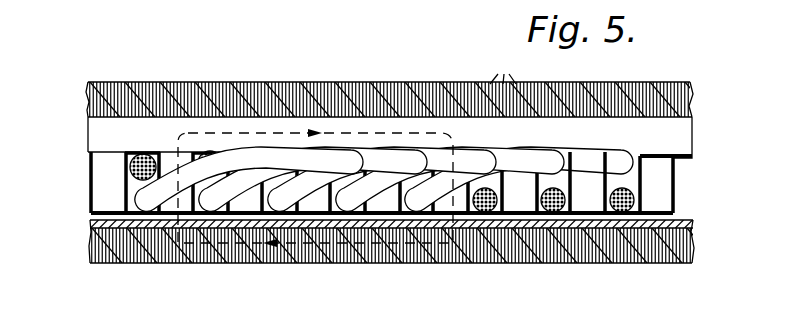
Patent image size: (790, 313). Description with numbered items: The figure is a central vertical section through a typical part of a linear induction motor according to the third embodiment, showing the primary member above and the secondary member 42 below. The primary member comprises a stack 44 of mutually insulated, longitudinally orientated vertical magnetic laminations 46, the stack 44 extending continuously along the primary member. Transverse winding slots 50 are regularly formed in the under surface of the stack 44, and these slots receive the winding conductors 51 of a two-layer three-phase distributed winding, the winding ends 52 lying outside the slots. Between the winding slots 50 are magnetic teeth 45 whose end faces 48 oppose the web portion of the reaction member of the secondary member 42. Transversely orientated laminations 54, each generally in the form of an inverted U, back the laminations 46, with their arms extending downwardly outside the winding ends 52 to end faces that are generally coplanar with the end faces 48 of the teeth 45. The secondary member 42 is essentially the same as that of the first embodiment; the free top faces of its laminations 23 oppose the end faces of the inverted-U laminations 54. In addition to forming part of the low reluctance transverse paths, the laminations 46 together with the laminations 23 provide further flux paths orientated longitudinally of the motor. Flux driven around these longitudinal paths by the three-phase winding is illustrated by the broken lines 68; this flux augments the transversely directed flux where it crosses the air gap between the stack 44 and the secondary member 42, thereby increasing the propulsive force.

The laminations 23 is at (327, 263).
The secondary member 42 is at (553, 266).
The stack 44 is at (142, 127).
The magnetic teeth 45 is at (257, 265).
The magnetic laminations 46 is at (656, 151).
The end faces 48 is at (105, 206).
The winding slots 50 is at (127, 190).
The winding conductors 51 is at (130, 168).
The winding ends 52 is at (295, 155).
The transversely orientated laminations 54 is at (505, 65).
The broken lines 68 is at (380, 133).